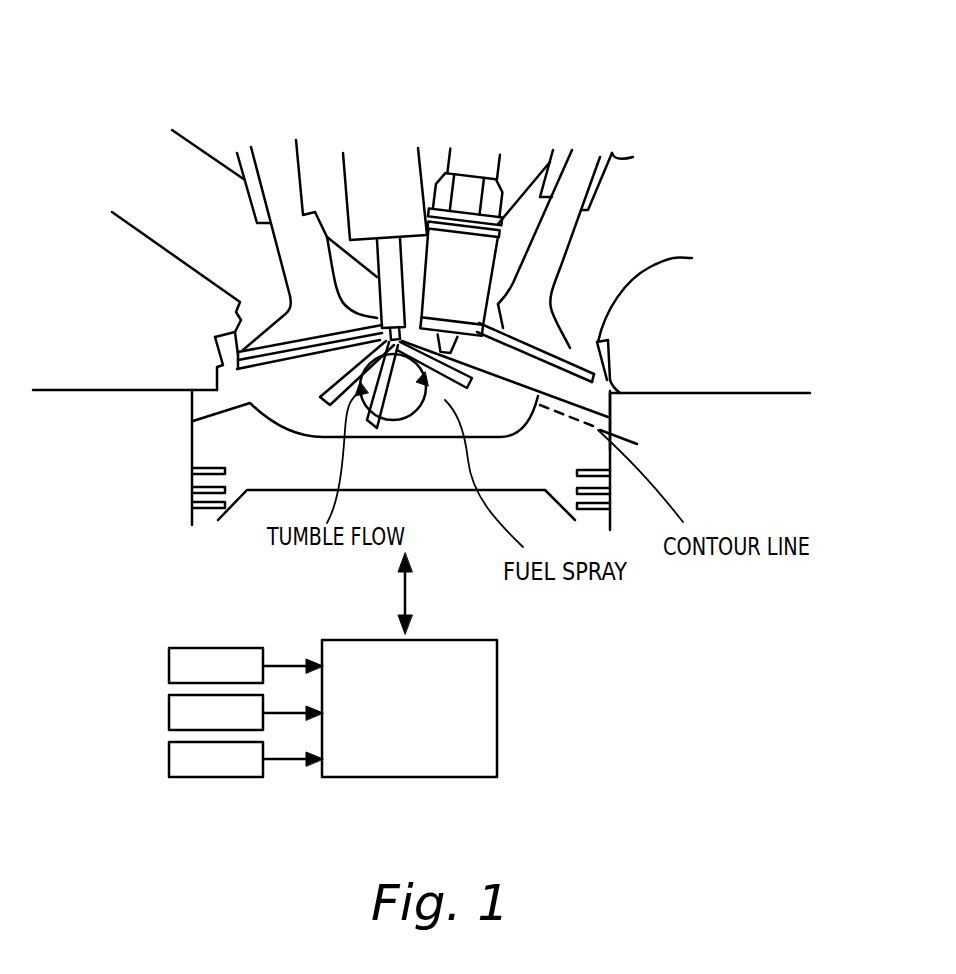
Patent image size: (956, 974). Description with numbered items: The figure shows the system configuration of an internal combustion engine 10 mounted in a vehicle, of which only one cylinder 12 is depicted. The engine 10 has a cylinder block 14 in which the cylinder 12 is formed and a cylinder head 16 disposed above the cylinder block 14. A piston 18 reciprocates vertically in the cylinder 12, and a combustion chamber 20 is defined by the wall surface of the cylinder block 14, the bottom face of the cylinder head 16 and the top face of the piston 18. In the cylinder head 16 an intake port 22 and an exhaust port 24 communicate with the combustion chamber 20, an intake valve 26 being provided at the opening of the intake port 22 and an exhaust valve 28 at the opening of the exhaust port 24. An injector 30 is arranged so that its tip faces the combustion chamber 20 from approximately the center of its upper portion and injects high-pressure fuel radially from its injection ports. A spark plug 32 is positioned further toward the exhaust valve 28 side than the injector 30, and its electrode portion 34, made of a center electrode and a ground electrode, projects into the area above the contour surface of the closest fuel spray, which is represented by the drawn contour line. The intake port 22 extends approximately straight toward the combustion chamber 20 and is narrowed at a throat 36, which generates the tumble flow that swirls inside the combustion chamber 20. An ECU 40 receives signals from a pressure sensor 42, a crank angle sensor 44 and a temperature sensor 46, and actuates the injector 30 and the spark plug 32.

The internal combustion engine 10 is at (183, 554).
The cylinder 12 is at (172, 448).
The cylinder block 14 is at (722, 456).
The cylinder head 16 is at (722, 371).
The piston 18 is at (452, 458).
The combustion chamber 20 is at (293, 405).
The intake port 22 is at (233, 227).
The exhaust port 24 is at (643, 257).
The intake valve 26 is at (274, 155).
The exhaust valve 28 is at (578, 162).
The injector 30 is at (380, 153).
The spark plug 32 is at (478, 148).
The electrode portion 34 is at (503, 328).
The throat 36 is at (250, 323).
The ECU 40 is at (497, 710).
The pressure sensor 42 is at (168, 662).
The crank angle sensor 44 is at (168, 709).
The temperature sensor 46 is at (168, 755).